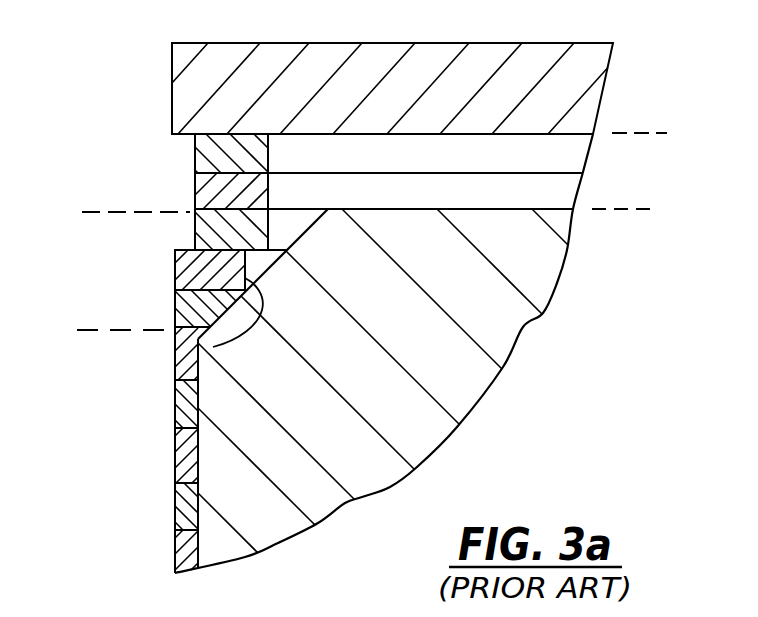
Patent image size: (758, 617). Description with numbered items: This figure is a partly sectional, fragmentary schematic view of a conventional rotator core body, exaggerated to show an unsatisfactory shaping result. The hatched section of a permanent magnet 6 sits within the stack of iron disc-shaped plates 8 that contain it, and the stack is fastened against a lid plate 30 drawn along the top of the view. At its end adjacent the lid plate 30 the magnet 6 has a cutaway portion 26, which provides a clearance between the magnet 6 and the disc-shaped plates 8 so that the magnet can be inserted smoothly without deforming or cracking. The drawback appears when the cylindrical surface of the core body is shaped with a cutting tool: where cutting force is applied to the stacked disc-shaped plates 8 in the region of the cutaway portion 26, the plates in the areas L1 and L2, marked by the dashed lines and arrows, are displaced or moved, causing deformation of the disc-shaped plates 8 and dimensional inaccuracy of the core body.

The lid plate 30 is at (465, 43).
The permanent magnet 6 is at (478, 372).
The disc-shaped plate 8 is at (177, 460).
The cutaway portion 26 is at (213, 347).
The area L1 is at (648, 178).
The area L2 is at (95, 291).